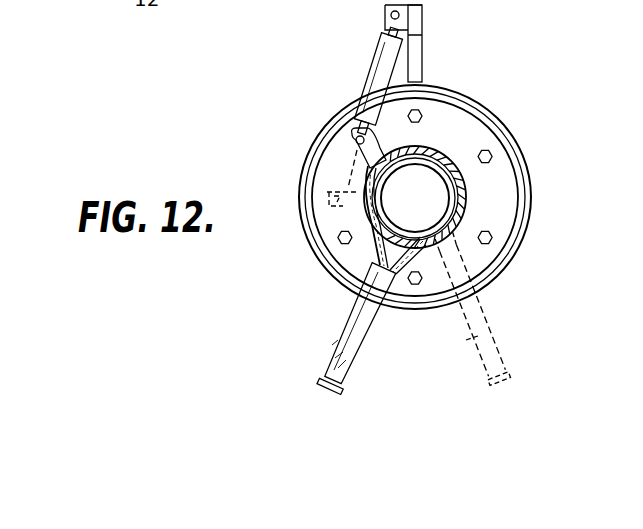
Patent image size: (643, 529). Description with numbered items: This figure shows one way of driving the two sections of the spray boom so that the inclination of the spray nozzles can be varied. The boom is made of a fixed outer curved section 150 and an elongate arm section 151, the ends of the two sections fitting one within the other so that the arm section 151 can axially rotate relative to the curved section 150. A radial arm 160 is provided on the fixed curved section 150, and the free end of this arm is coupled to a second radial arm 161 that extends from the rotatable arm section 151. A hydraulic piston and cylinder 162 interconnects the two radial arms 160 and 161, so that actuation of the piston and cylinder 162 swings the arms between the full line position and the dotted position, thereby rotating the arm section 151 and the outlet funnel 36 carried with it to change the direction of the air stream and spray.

The curved section 150 is at (481, 101).
The arm section 151 is at (462, 193).
The radial arm 160 is at (414, 55).
The radial arm 161 is at (358, 162).
The hydraulic piston and cylinder 162 is at (380, 63).
The outlet funnel 36 is at (462, 355).